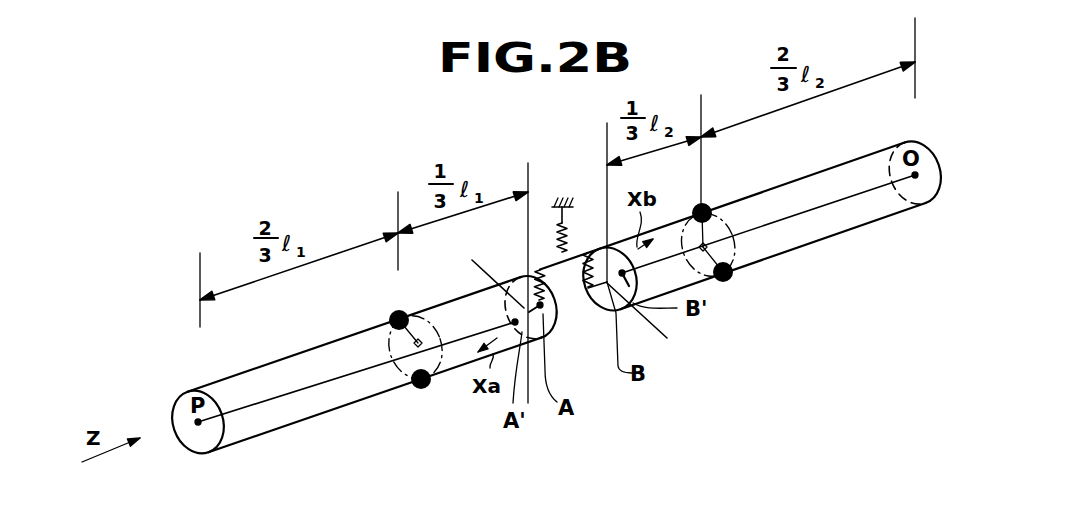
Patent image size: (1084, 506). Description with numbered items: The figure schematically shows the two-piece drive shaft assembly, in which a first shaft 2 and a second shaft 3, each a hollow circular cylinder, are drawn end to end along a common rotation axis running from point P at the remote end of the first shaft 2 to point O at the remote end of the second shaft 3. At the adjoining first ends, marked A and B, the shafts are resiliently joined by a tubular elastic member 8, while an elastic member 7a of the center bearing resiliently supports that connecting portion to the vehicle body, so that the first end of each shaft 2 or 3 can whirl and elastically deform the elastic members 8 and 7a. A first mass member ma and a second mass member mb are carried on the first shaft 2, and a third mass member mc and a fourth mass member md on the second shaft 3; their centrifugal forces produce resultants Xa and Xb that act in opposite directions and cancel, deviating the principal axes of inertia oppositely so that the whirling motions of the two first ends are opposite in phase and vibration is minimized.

The first shaft 2 is at (295, 423).
The second shaft 3 is at (847, 232).
The elastic member of center bearing 7a is at (565, 226).
The elastic member 8 is at (546, 288).
The first mass member ma is at (392, 318).
The second mass member mb is at (419, 343).
The third mass member mc is at (723, 272).
The fourth mass member md is at (700, 215).